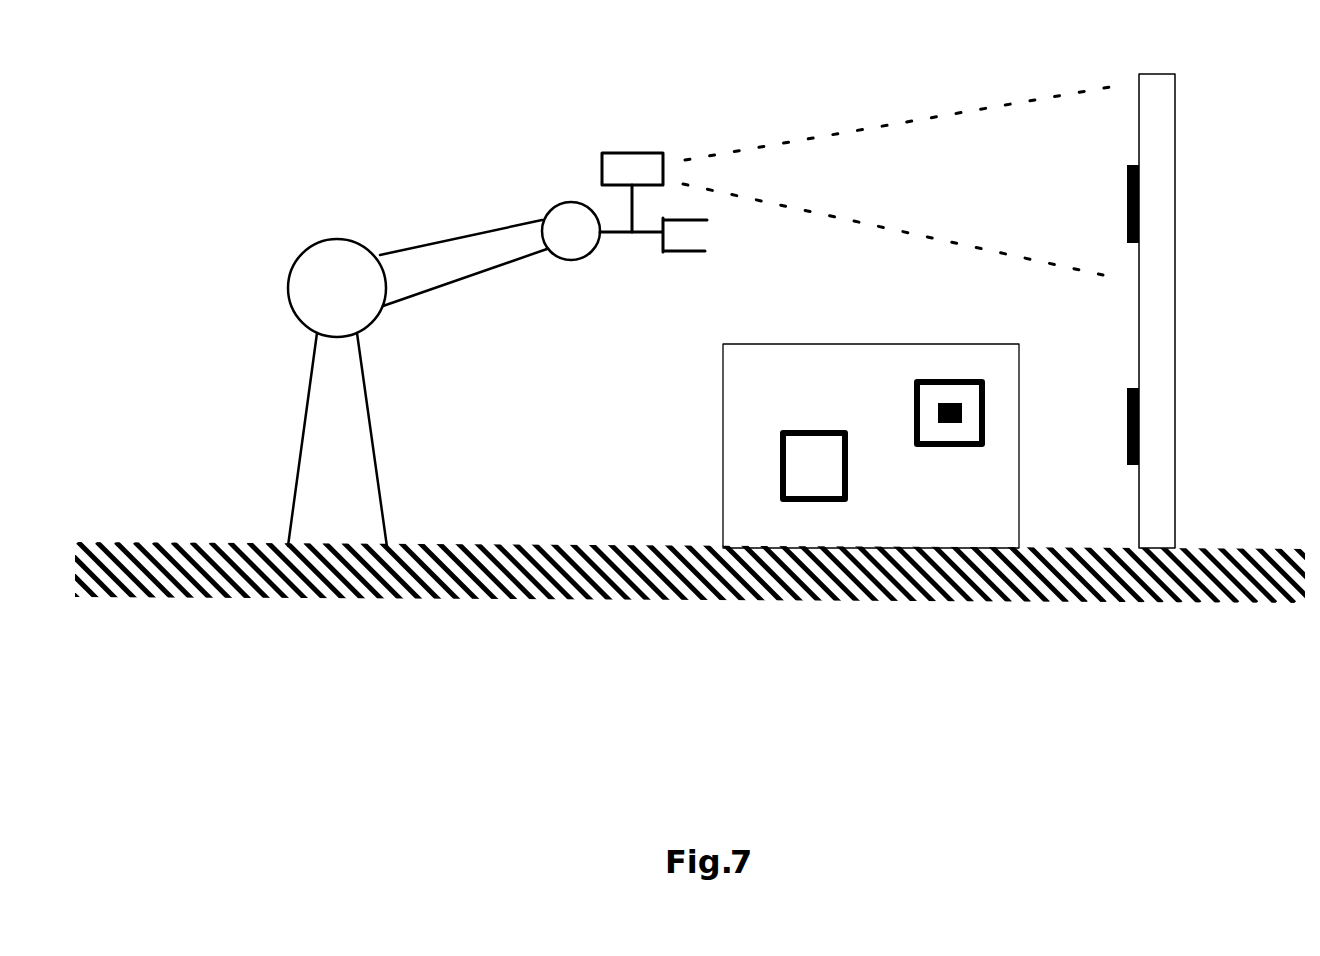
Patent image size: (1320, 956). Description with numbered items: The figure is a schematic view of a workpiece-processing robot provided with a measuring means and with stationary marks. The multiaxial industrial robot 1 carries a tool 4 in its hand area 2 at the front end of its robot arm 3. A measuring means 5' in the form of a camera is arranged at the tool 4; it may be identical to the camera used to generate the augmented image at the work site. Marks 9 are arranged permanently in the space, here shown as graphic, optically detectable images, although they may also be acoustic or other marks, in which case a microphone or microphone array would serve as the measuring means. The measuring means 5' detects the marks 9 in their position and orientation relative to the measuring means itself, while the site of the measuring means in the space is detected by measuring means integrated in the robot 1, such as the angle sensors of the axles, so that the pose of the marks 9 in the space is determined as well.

The industrial robot 1 is at (280, 461).
The hand area 2 is at (575, 243).
The robot arm 3 is at (472, 260).
The tool 4 is at (645, 238).
The measuring means 5' is at (856, 172).
The marks 9 is at (1139, 198).